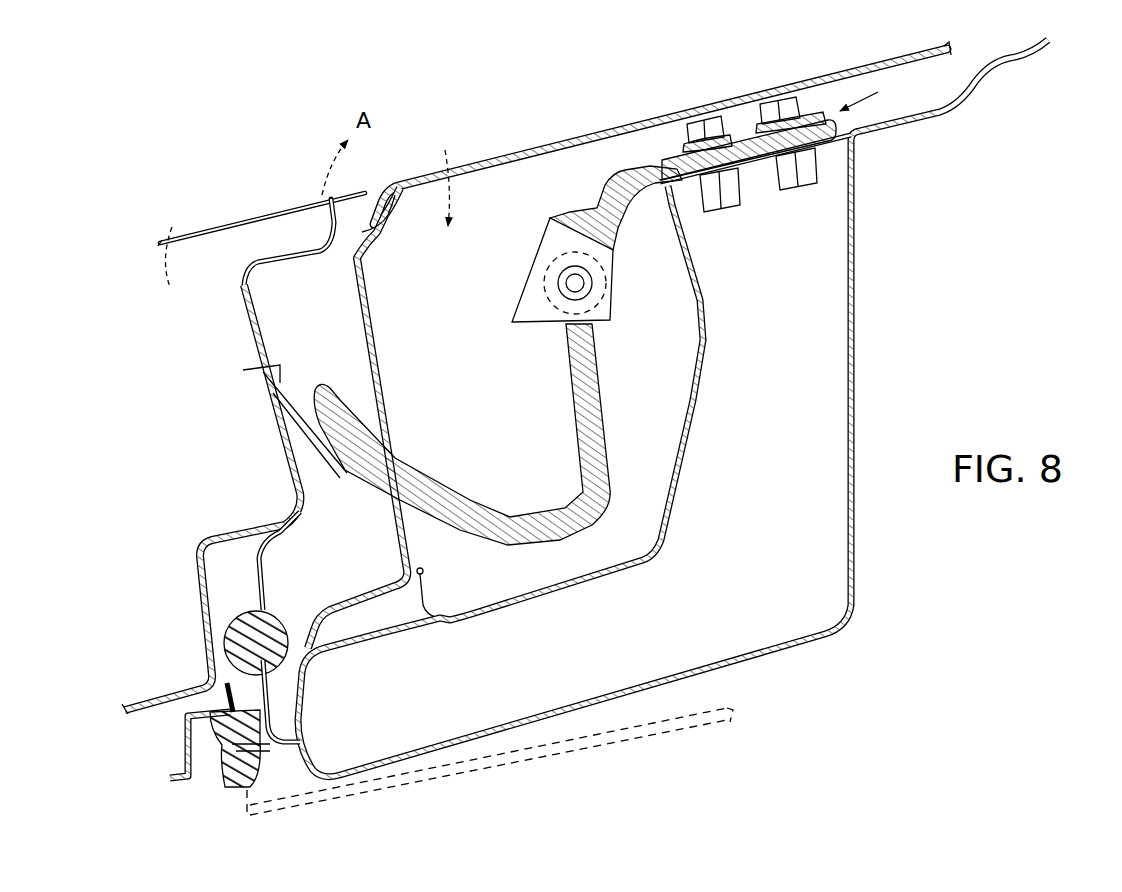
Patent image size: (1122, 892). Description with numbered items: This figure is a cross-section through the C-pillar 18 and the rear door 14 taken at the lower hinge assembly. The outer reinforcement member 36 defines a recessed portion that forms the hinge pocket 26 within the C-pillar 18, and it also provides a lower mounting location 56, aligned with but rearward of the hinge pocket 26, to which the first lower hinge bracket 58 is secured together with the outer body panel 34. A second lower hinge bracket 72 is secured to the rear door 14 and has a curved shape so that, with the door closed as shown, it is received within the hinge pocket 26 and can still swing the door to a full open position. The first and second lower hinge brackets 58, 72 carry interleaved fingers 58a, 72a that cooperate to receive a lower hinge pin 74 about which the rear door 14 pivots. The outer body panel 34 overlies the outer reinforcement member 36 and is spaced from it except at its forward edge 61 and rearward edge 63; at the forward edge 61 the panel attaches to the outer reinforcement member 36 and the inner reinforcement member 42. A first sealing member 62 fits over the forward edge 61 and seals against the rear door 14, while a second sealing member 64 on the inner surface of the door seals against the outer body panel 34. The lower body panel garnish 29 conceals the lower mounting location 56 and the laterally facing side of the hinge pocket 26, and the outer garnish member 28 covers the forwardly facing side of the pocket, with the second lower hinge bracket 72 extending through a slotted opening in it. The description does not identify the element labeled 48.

The rear door 14 is at (261, 240).
The C-pillar 18 is at (680, 380).
The hinge pocket 26 is at (438, 173).
The outer garnish member 28 is at (362, 232).
The lower body panel garnish 29 is at (517, 152).
The outer body panel 34 is at (995, 66).
The outer reinforcement member 36 is at (670, 538).
The inner reinforcement member 42 is at (847, 537).
The trim panel 48 is at (660, 736).
The lower mounting location 56 is at (870, 91).
The first lower hinge bracket 58 is at (750, 172).
The interleaved fingers 58a is at (613, 275).
The forward edge 61 is at (280, 757).
The first sealing member 62 is at (232, 773).
The rearward edge 63 is at (888, 132).
The second sealing member 64 is at (267, 627).
The second lower hinge bracket 72 is at (408, 483).
The interleaved fingers 72a is at (560, 327).
The lower hinge pin 74 is at (578, 283).